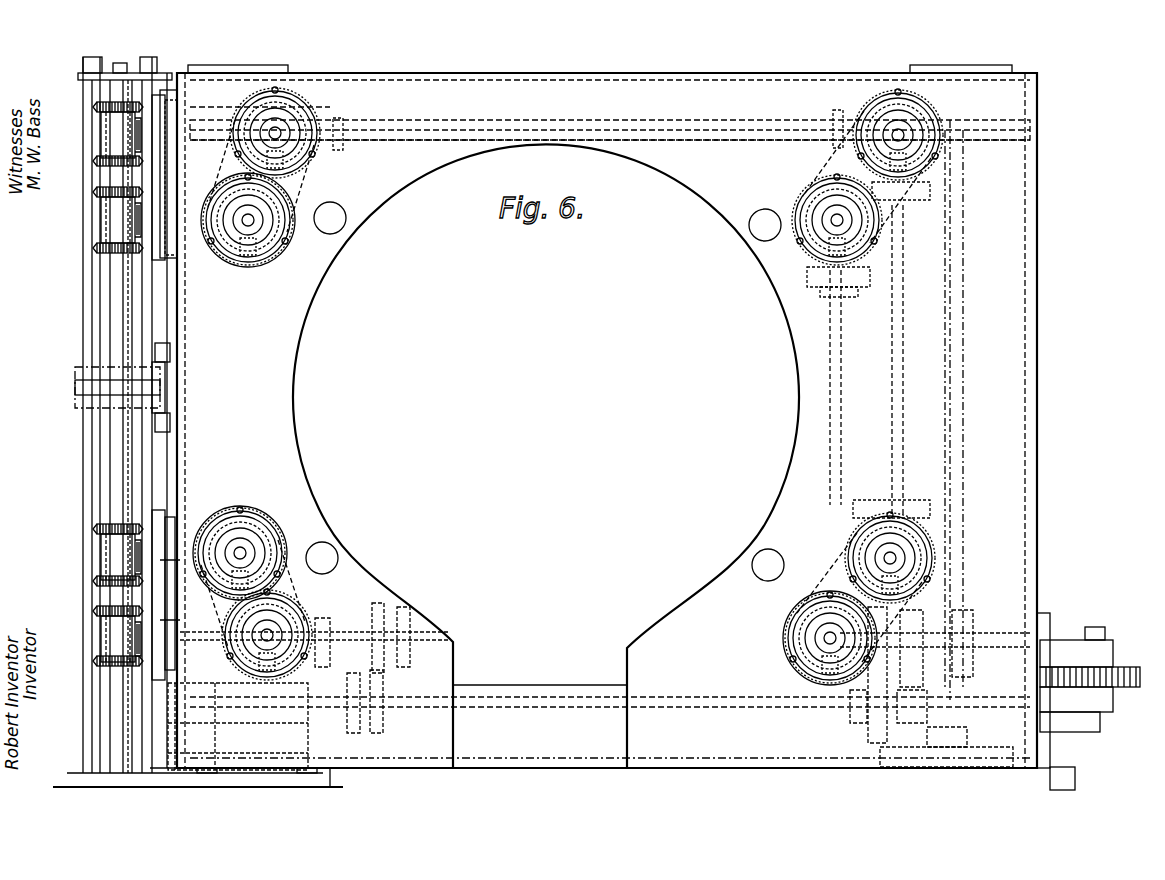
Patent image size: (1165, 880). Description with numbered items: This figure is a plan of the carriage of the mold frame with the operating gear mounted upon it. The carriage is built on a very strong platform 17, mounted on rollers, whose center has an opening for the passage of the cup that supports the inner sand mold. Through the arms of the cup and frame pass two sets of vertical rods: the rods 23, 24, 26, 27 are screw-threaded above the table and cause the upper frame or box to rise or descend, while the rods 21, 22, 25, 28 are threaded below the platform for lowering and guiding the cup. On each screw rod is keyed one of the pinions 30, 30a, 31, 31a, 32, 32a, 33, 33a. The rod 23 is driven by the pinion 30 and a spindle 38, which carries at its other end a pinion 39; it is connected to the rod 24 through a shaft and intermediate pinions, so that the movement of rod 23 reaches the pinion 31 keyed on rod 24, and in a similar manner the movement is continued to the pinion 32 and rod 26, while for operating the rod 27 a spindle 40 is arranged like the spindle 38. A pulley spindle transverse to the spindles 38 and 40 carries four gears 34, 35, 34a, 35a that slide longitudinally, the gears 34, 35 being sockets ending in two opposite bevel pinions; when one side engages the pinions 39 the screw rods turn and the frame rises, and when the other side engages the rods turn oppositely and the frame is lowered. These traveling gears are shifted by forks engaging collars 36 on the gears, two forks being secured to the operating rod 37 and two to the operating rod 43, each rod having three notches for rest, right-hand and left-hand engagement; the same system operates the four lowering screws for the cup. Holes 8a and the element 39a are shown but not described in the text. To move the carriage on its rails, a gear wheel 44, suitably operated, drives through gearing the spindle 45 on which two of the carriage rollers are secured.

The platform 17 is at (1000, 362).
The operating rod 37 is at (84, 459).
The operating rod 43 is at (140, 318).
The collar 36 is at (108, 98).
The gear 34 is at (115, 135).
The gear 35 is at (112, 218).
The gear 34a is at (110, 553).
The gear 35a is at (108, 625).
The pinion 39 is at (135, 147).
The roller bracket 39a is at (137, 230).
The spindle 40 is at (160, 573).
The pinion 30 is at (283, 136).
The rod 23 is at (320, 150).
The spindle 38 is at (205, 136).
The rod 28 is at (250, 222).
The pinion 33a is at (248, 232).
The pinion 31 is at (917, 123).
The rod 24 is at (896, 134).
The rod 25 is at (836, 220).
The pinion 32a is at (827, 228).
The spindle 45 is at (955, 232).
The pinion 33 is at (241, 551).
The rod 27 is at (247, 548).
The rod 22 is at (272, 634).
The pinion 31a is at (282, 610).
The pinion 32 is at (893, 570).
The rod 26 is at (887, 555).
The rod 21 is at (827, 637).
The pinion 30a is at (790, 633).
The holes 8a is at (333, 218).
The gear wheel 44 is at (1127, 685).